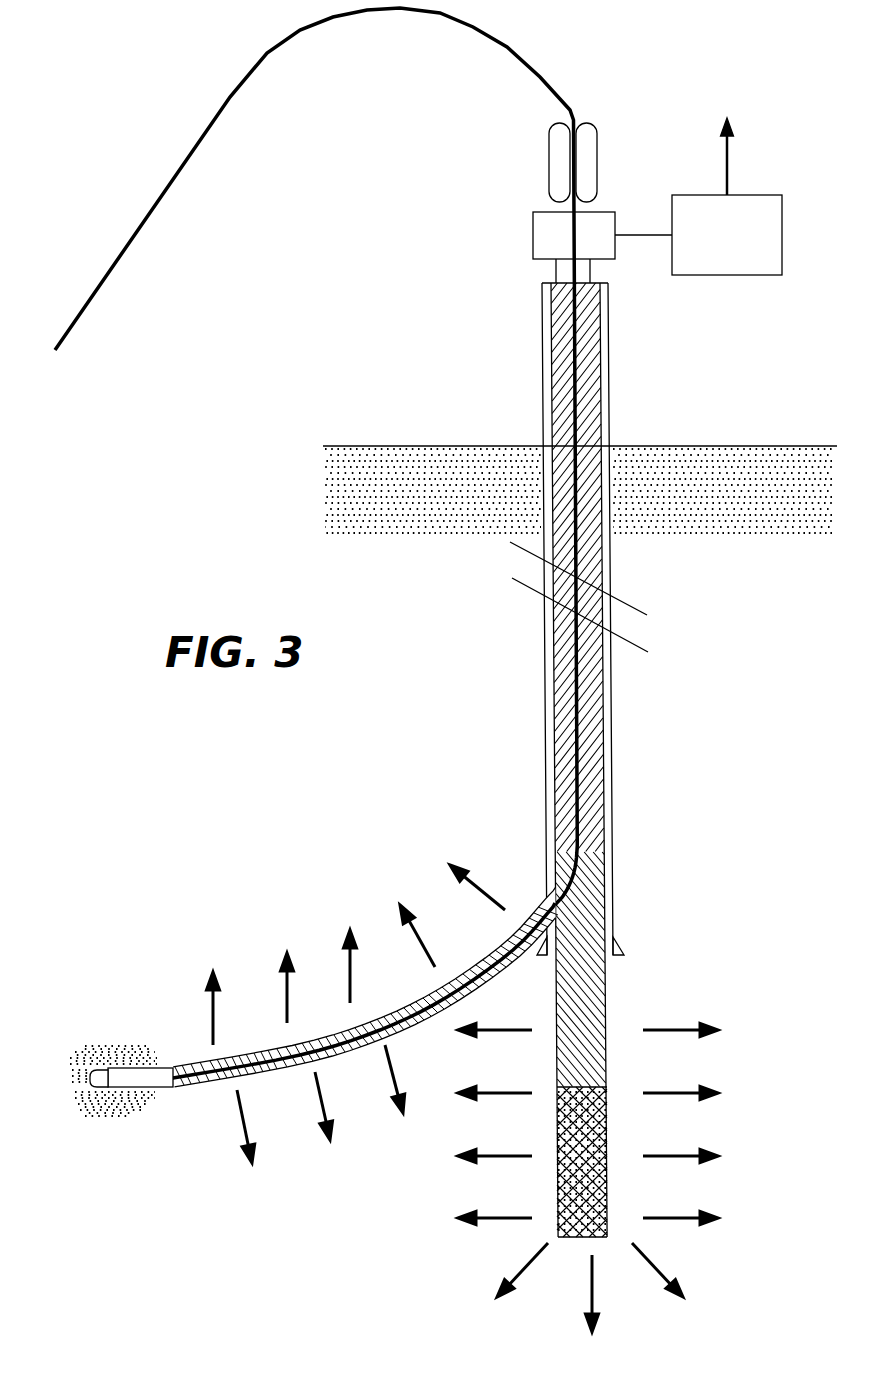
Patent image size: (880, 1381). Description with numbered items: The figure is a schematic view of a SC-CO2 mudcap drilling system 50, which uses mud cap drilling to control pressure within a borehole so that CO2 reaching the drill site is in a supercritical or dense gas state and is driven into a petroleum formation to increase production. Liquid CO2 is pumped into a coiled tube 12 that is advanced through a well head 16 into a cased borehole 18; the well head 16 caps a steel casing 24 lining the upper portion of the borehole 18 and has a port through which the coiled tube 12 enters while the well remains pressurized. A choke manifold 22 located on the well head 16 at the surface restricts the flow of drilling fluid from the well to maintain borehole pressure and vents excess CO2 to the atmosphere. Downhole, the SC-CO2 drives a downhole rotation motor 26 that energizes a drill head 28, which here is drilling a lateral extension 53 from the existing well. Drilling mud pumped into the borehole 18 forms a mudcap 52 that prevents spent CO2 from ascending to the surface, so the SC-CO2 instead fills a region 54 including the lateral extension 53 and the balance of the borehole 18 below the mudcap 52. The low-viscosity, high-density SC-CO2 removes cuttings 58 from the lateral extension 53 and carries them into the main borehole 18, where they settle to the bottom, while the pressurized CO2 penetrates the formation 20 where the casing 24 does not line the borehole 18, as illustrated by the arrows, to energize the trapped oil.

The SC-CO2 mudcap drilling system 50 is at (367, 543).
The coiled tube 12 is at (435, 12).
The well head 16 is at (532, 212).
The cased borehole 18 is at (547, 385).
The earth formation 20 is at (677, 446).
The choke manifold 22 is at (672, 275).
The steel casing 24 is at (610, 565).
The downhole rotation motor 26 is at (140, 1087).
The drill head 28 is at (93, 1087).
The mudcap 52 is at (567, 730).
The lateral extension 53 is at (307, 927).
The region 54 is at (422, 1008).
The cuttings 58 is at (562, 1132).